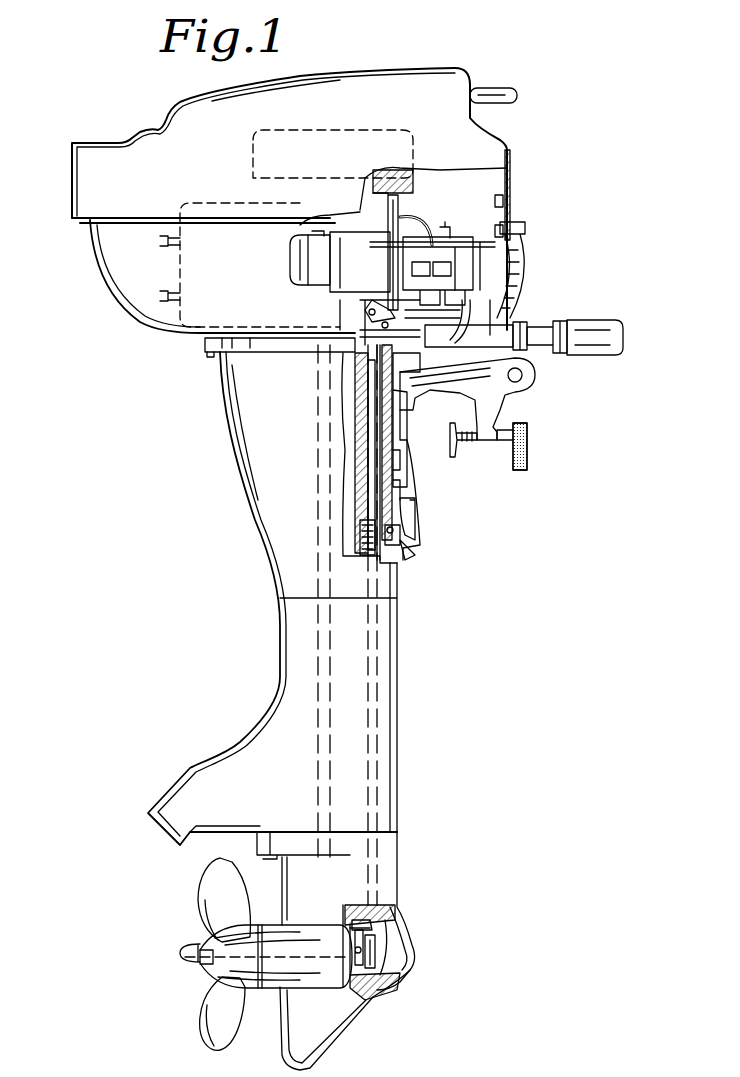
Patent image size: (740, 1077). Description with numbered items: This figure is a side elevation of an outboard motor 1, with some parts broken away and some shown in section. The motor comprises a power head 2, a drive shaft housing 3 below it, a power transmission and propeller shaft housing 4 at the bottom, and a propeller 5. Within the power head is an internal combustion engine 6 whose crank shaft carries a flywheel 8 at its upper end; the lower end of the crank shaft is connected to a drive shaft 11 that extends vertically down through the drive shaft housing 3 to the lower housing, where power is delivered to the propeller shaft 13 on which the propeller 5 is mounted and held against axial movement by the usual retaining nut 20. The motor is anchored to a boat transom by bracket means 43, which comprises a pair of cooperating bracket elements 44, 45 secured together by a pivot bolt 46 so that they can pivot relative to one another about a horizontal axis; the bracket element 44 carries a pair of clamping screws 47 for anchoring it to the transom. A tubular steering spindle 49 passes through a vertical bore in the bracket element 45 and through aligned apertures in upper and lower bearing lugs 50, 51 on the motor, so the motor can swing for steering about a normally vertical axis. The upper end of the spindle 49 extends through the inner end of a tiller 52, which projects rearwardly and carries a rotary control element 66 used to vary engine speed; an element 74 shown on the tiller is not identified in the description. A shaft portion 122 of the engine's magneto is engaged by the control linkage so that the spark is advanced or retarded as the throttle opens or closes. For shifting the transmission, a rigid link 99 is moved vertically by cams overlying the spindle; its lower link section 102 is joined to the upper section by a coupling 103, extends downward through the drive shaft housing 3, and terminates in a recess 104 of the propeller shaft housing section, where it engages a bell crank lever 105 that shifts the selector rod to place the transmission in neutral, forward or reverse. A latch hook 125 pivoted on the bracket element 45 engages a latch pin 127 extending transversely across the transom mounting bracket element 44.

The outboard motor 1 is at (222, 420).
The power head 2 is at (222, 283).
The drive shaft housing 3 is at (305, 623).
The power transmission and propeller shaft housing 4 is at (287, 973).
The propeller 5 is at (217, 1012).
The internal combustion engine 6 is at (302, 268).
The flywheel 8 is at (412, 180).
The drive shaft 11 is at (318, 728).
The propeller shaft 13 is at (210, 972).
The retaining nut 20 is at (210, 950).
The bracket means 43 is at (540, 386).
The bracket element 44 is at (490, 413).
The bracket element 45 is at (420, 520).
The pivot bolt 46 is at (527, 375).
The clamping screws 47 is at (462, 445).
The tubular steering spindle 49 is at (368, 402).
The upper bearing lug 50 is at (360, 371).
The lower bearing lug 51 is at (358, 463).
The tiller 52 is at (528, 318).
The control element 66 is at (545, 330).
The throttle grip 74 is at (612, 333).
The rigid link 99 is at (375, 420).
The link section 102 is at (374, 953).
The coupling 103 is at (358, 540).
The recess 104 is at (388, 978).
The bell crank lever 105 is at (365, 925).
The shaft portion 122 is at (398, 194).
The latch hook 125 is at (405, 550).
The latch pin 127 is at (420, 533).